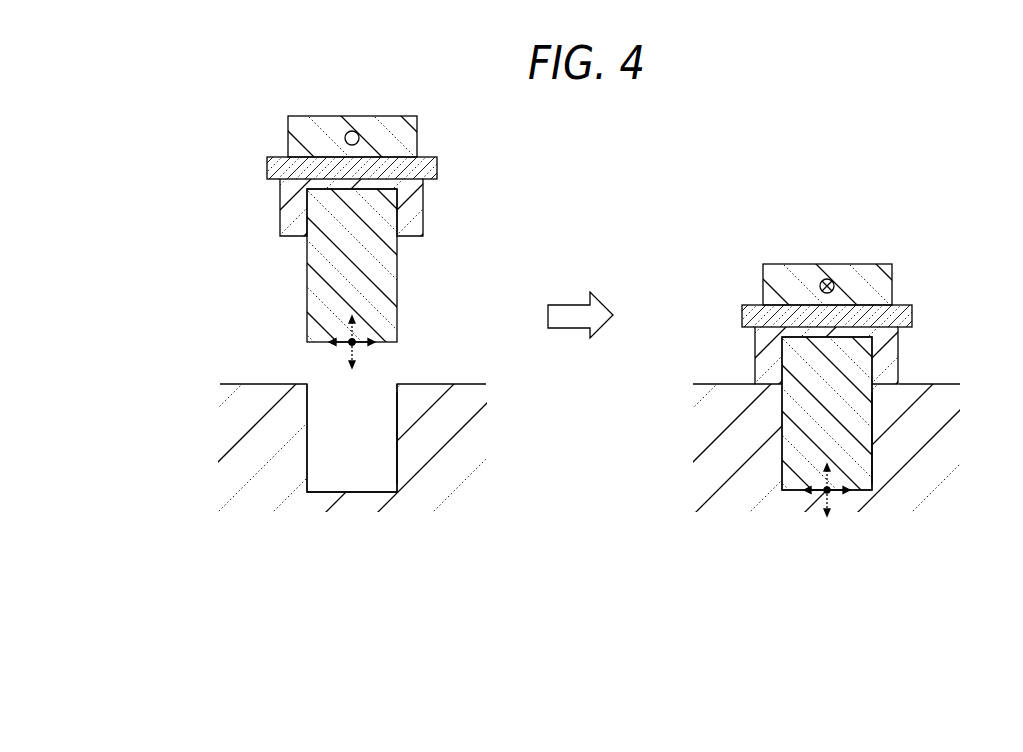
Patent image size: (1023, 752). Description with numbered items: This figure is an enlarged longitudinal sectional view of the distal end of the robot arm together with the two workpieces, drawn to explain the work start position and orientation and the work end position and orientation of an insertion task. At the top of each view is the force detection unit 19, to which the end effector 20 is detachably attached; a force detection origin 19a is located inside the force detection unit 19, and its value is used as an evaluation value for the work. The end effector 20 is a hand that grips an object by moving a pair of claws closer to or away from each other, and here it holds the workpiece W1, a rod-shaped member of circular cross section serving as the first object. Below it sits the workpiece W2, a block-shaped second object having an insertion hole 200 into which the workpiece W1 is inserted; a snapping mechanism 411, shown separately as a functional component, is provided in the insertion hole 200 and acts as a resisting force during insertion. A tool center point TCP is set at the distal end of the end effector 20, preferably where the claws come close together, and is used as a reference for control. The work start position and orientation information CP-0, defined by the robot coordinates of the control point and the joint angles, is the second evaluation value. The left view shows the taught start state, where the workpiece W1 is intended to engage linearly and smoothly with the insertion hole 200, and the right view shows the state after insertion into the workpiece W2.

The force detection unit 19 is at (305, 140).
The rotation axis 19a is at (359, 137).
The end effector 20 is at (292, 206).
The workpiece W1 is at (363, 254).
The workpiece W2 is at (243, 391).
The work start position and orientation information CP-0 is at (355, 343).
The tool center point TCP is at (356, 344).
The insertion hole 200 is at (307, 430).
The snapping mechanism 411 is at (397, 435).